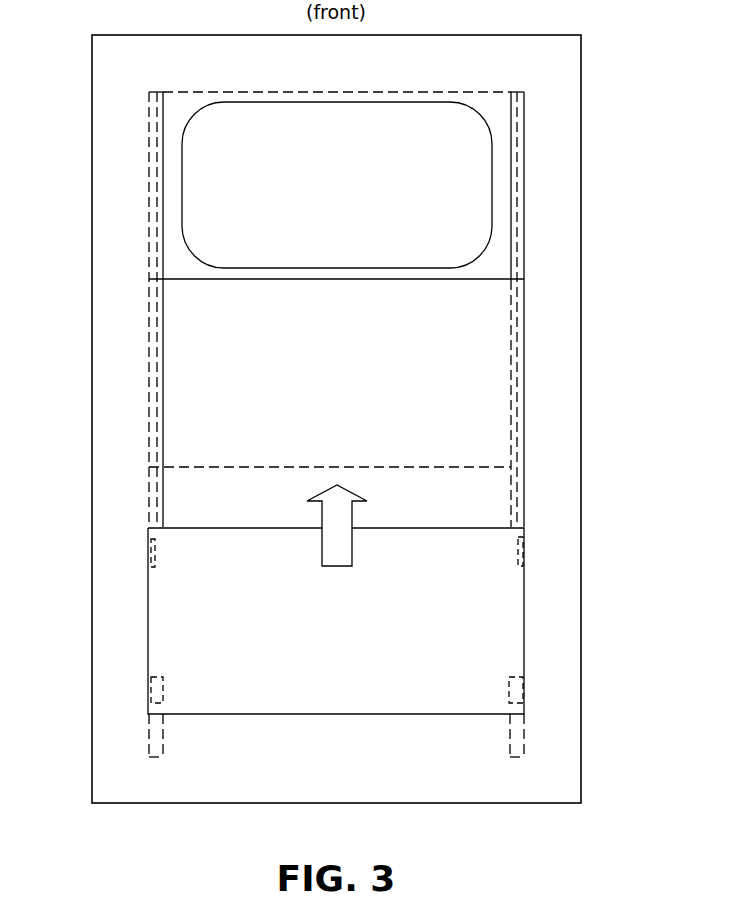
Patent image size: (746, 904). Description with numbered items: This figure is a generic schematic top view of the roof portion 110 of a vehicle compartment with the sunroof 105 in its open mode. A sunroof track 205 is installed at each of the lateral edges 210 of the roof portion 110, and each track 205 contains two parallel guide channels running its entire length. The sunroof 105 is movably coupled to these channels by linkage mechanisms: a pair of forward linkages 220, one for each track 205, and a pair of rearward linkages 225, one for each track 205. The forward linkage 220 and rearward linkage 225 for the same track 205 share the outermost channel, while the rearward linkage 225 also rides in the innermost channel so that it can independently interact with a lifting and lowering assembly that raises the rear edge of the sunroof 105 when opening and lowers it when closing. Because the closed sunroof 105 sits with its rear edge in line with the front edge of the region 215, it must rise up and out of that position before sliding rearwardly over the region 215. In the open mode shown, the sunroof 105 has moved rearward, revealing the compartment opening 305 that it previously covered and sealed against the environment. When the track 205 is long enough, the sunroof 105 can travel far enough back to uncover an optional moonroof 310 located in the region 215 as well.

The sunroof 105 is at (336, 599).
The roof portion 110 is at (112, 92).
The sunroof track 205 is at (164, 410).
The lateral edges 210 is at (108, 485).
The region 215 is at (402, 279).
The forward linkages 220 is at (157, 555).
The rearward linkages 225 is at (162, 697).
The compartment opening 305 is at (337, 185).
The moonroof 310 is at (337, 373).